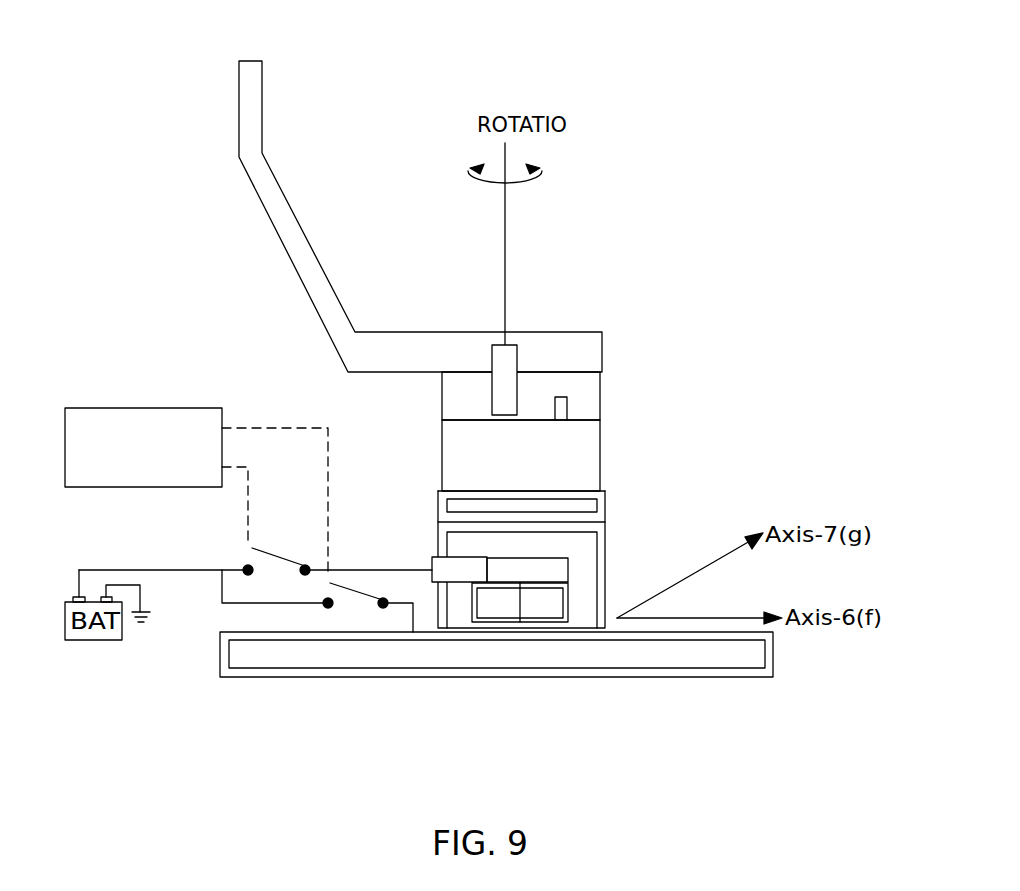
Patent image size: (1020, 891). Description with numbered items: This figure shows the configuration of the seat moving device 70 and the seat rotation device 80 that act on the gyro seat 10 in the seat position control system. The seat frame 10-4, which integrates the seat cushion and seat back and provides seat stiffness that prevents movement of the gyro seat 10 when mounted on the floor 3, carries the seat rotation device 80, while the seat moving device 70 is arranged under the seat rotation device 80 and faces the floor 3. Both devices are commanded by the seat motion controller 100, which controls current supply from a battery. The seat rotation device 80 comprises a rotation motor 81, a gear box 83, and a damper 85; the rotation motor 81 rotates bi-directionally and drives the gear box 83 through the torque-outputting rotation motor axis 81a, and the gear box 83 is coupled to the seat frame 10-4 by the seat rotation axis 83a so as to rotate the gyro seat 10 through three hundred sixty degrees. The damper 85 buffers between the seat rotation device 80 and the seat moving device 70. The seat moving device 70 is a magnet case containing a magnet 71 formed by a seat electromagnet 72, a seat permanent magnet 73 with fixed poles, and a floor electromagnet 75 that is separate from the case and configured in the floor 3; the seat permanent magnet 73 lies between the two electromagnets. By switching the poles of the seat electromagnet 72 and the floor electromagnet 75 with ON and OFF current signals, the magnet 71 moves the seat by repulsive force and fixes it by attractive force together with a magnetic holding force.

The gyro seat 10 is at (367, 211).
The seat frame 10-4 is at (283, 247).
The seat motion controller 100 is at (142, 408).
The seat rotation device 80 is at (595, 381).
The gear box 83 is at (580, 390).
The seat rotation axis 83a is at (510, 358).
The rotation motor 81 is at (583, 446).
The rotation motor axis 81a is at (563, 393).
The damper 85 is at (574, 488).
The seat moving device 70 is at (605, 548).
The magnet 71 is at (497, 680).
The seat electromagnet 72 is at (460, 573).
The seat permanent magnet 73 is at (538, 607).
The floor electromagnet 75 is at (458, 755).
The floor 3 is at (717, 678).